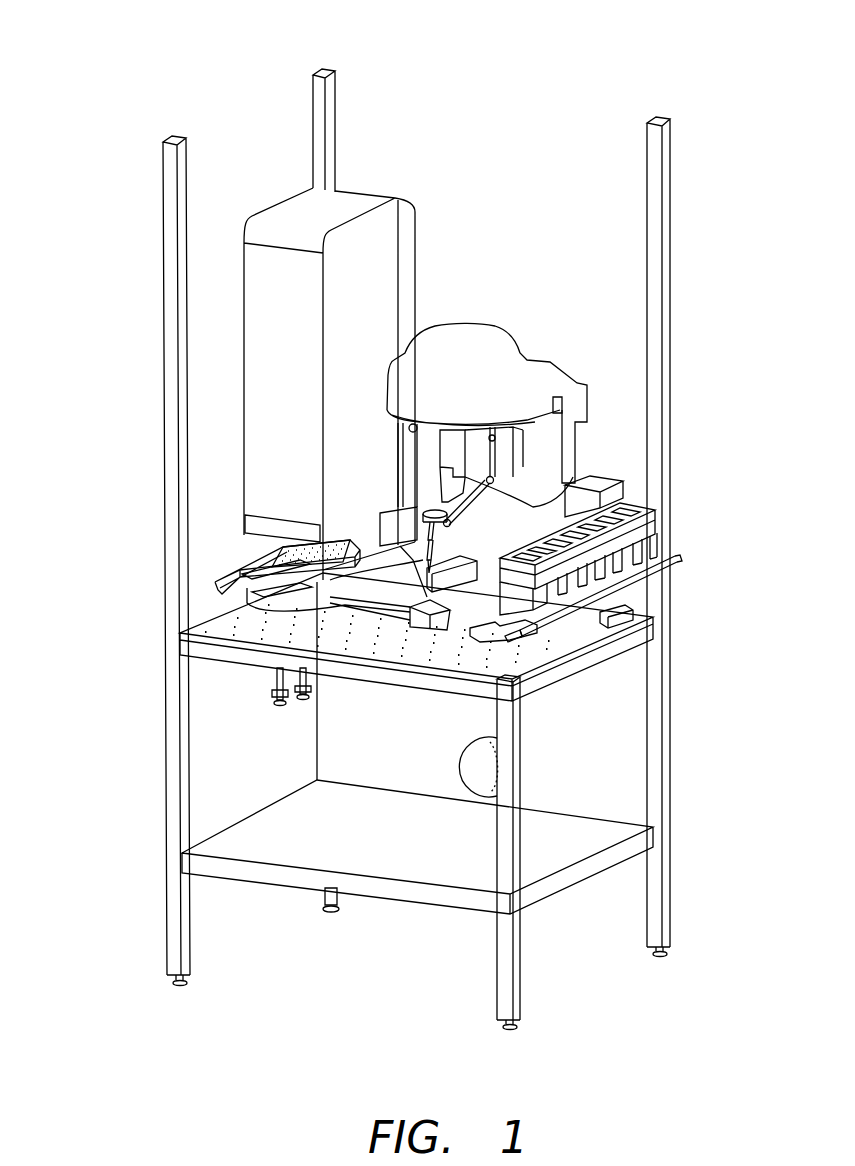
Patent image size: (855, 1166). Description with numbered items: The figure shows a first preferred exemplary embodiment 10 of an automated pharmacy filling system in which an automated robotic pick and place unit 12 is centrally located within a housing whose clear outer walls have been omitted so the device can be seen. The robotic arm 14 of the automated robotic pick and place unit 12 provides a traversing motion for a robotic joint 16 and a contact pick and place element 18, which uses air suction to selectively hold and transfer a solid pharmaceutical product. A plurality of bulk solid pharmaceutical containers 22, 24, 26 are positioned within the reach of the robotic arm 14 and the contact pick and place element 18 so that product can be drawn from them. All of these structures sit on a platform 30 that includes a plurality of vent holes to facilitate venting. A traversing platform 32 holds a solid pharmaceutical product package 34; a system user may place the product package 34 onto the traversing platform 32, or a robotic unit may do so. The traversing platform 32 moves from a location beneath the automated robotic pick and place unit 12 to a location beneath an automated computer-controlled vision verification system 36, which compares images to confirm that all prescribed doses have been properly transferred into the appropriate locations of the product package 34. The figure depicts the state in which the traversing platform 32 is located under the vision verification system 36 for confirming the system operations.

The first preferred exemplary embodiment 10 is at (692, 66).
The automated robotic pick and place unit 12 is at (475, 340).
The robotic arm 14 is at (568, 486).
The robotic joint 16 is at (222, 582).
The contact pick and place element 18 is at (262, 612).
The bulk solid pharmaceutical container 22 is at (605, 542).
The bulk solid pharmaceutical container 24 is at (612, 545).
The bulk solid pharmaceutical container 26 is at (617, 522).
The platform 30 is at (543, 657).
The traversing platform 32 is at (265, 593).
The solid pharmaceutical product package 34 is at (250, 572).
The automated computer-controlled vision verification system 36 is at (258, 262).